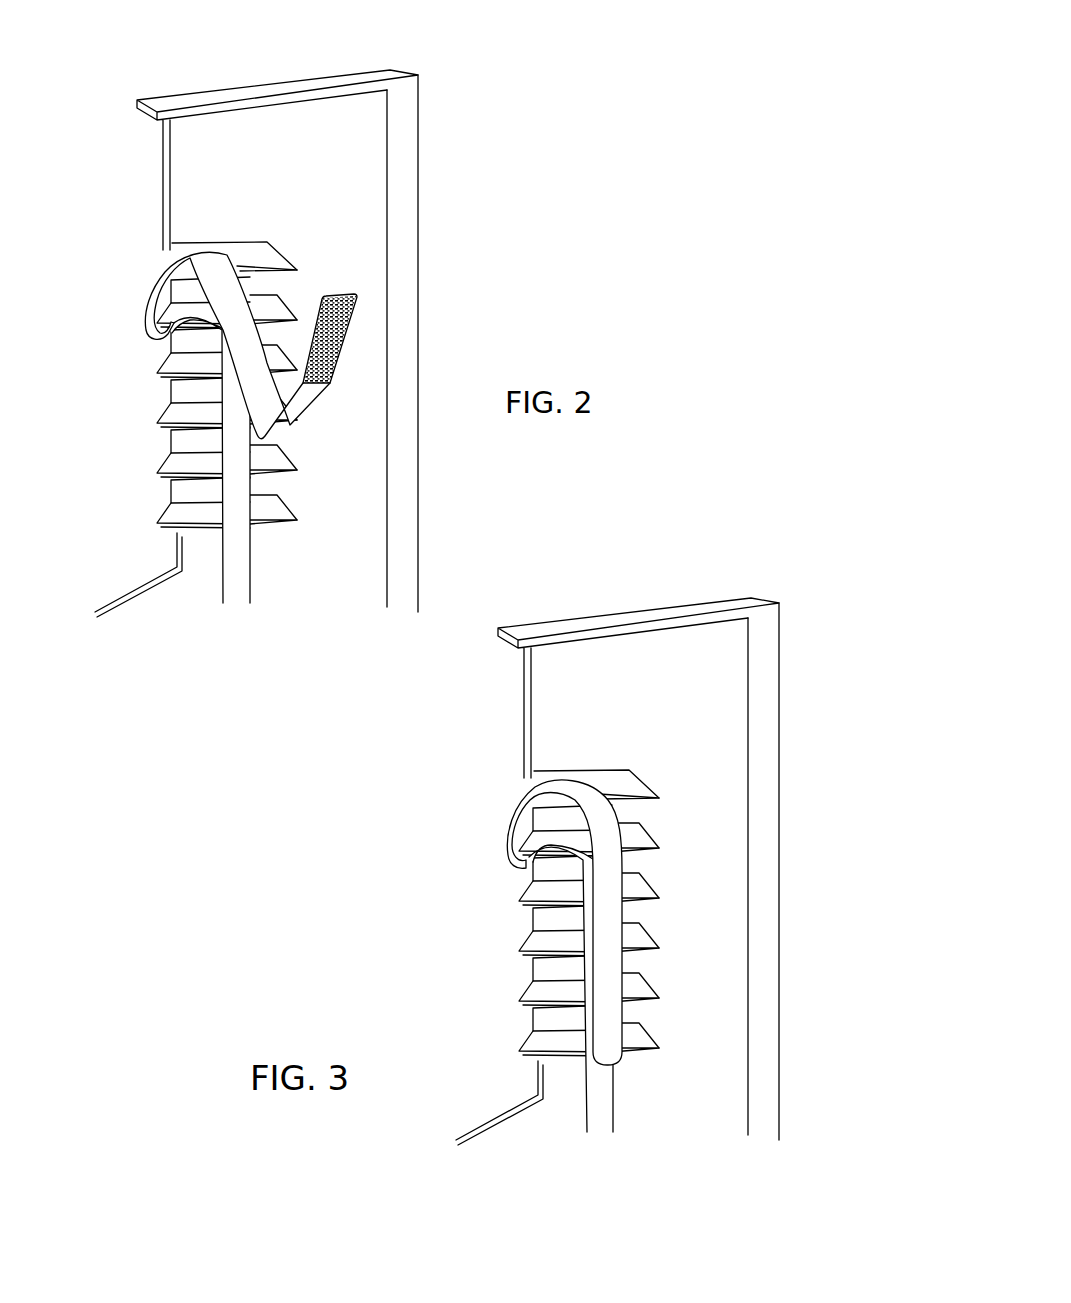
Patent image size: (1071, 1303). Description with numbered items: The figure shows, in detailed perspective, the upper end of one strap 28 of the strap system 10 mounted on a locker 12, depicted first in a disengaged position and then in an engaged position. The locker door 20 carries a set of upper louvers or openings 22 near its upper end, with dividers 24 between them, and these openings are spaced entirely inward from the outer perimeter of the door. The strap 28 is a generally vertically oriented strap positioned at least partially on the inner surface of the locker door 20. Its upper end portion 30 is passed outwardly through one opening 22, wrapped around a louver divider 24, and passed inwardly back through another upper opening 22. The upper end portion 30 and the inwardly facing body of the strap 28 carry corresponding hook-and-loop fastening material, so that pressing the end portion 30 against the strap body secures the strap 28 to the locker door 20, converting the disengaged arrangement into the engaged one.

In FIG. 2, the strap system 10 is at (200, 617).
In FIG. 3, the strap system 10 is at (555, 1135).
In FIG. 2, the locker 12 is at (379, 133).
In FIG. 3, the locker 12 is at (732, 672).
In FIG. 2, the locker door 20 is at (320, 123).
In FIG. 3, the locker door 20 is at (680, 658).
In FIG. 2, the upper openings 22 is at (250, 253).
In FIG. 3, the upper openings 22 is at (610, 787).
In FIG. 2, the divider 24 is at (257, 288).
In FIG. 3, the divider 24 is at (617, 813).
In FIG. 2, the strap 28 is at (244, 583).
In FIG. 3, the strap 28 is at (600, 1115).
In FIG. 2, the upper end portion 30 is at (363, 307).
In FIG. 3, the upper end portion 30 is at (610, 1040).